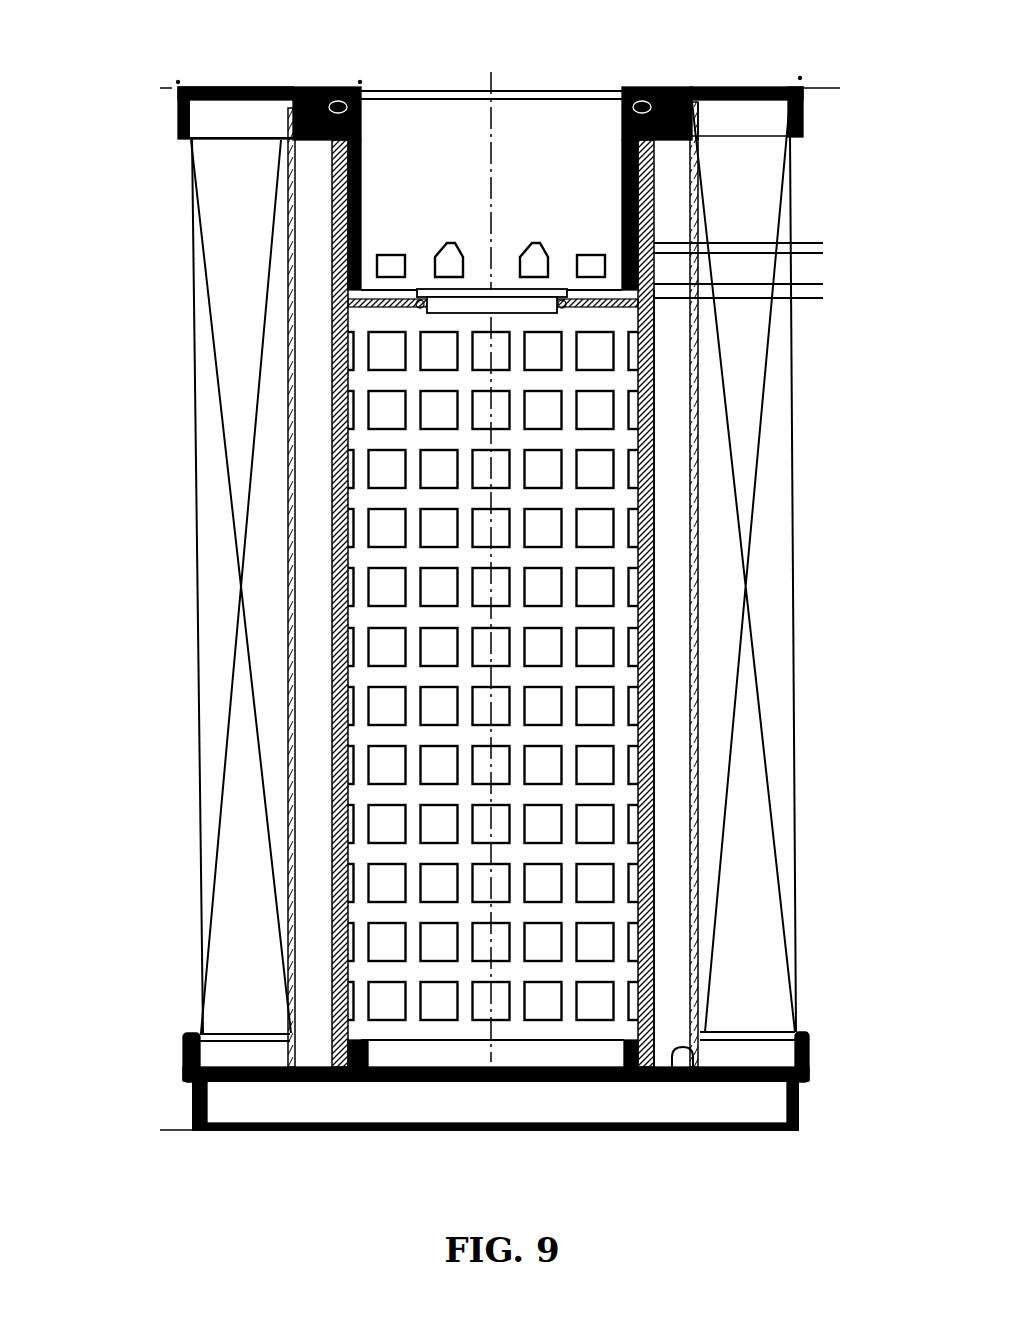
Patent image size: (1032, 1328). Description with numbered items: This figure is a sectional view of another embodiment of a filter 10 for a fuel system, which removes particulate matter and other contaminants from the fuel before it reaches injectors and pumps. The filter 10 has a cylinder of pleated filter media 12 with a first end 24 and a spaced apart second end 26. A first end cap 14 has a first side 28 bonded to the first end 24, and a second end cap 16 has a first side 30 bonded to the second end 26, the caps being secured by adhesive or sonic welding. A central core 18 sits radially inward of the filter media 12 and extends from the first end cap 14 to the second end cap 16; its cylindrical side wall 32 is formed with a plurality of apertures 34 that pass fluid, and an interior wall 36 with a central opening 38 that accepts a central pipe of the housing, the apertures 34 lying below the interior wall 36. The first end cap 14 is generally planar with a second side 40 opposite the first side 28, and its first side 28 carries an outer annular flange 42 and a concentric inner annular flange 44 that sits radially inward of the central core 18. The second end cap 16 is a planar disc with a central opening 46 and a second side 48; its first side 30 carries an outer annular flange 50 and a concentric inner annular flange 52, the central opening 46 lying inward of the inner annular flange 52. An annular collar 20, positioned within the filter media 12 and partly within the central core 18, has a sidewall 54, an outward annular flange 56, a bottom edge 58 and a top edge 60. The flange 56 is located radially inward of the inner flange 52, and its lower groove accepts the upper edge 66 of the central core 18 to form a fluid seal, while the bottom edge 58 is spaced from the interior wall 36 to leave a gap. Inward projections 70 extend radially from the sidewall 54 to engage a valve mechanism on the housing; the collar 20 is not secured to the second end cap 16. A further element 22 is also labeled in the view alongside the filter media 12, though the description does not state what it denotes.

The filter 10 is at (798, 439).
The pleated filter media 12 is at (753, 855).
The first end cap 14 is at (793, 1078).
The second end cap 16 is at (723, 88).
The central core 18 is at (657, 688).
The annular collar 20 is at (622, 180).
The support rod 22 is at (697, 572).
The first end 24 is at (760, 1053).
The second end 26 is at (752, 112).
The first side 28 is at (678, 1050).
The first side 30 is at (236, 103).
The cylindrical side wall 32 is at (657, 836).
The apertures 34 is at (615, 768).
The interior wall 36 is at (653, 243).
The central opening 38 is at (476, 275).
The second side 40 is at (657, 1067).
The outer annular flange 42 is at (803, 1049).
The inner annular flange 44 is at (617, 1048).
The central opening 46 is at (413, 63).
The second side 48 is at (257, 88).
The outer annular flange 50 is at (700, 113).
The inner annular flange 52 is at (767, 89).
The sidewall 54 is at (362, 168).
The annular flange 56 is at (313, 142).
The bottom edge 58 is at (656, 285).
The top edge 60 is at (625, 87).
The upper edge 66 is at (653, 88).
The inward projections 70 is at (592, 267).